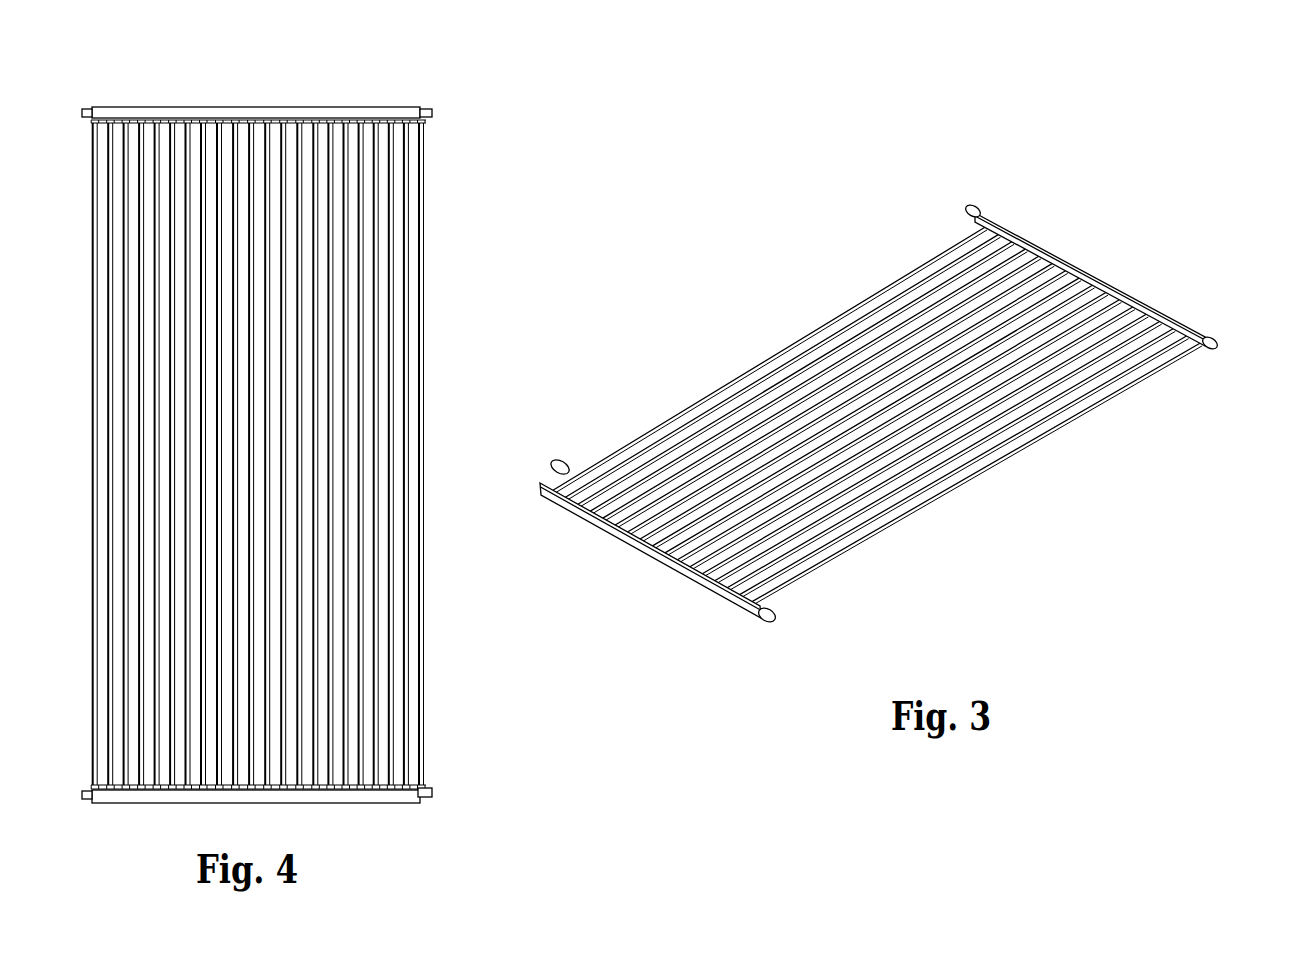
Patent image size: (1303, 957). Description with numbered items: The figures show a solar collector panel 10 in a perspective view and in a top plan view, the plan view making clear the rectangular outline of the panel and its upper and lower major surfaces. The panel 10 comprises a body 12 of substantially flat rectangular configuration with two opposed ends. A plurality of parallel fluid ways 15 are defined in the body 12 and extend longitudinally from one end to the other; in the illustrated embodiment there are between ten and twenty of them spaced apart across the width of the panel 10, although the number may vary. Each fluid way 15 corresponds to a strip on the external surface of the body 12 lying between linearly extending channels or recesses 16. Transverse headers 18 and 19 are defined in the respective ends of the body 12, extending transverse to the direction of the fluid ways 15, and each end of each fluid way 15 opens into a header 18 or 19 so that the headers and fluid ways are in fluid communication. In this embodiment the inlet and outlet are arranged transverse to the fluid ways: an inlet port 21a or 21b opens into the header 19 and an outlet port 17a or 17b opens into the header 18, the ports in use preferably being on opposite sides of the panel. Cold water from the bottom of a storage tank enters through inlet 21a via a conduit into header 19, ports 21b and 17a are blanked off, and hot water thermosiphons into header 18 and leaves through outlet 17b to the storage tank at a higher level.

In FIG. 4, the panel 10 is at (466, 186).
In FIG. 3, the panel 10 is at (812, 279).
In FIG. 3, the body 12 is at (867, 415).
In FIG. 4, the fluid ways 15 is at (365, 352).
In FIG. 3, the fluid ways 15 is at (813, 378).
In FIG. 3, the channels 16 is at (682, 433).
In FIG. 3, the outlet port 17a is at (966, 210).
In FIG. 3, the outlet port 17b is at (1217, 349).
In FIG. 4, the header 18 is at (253, 116).
In FIG. 3, the header 18 is at (1088, 270).
In FIG. 4, the header 19 is at (305, 790).
In FIG. 3, the header 19 is at (660, 548).
In FIG. 3, the inlet port 21a is at (550, 466).
In FIG. 3, the inlet port 21b is at (776, 624).